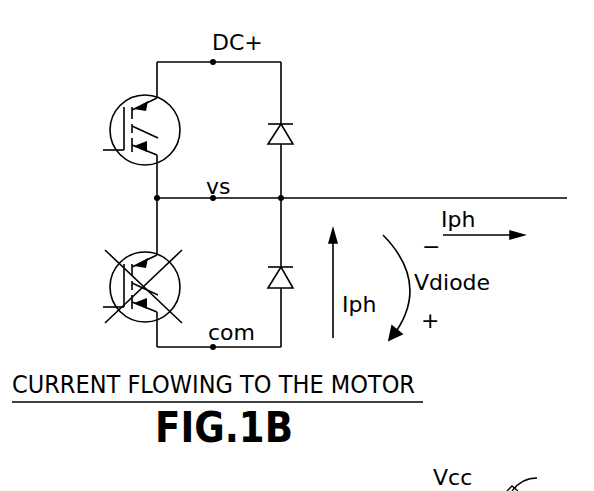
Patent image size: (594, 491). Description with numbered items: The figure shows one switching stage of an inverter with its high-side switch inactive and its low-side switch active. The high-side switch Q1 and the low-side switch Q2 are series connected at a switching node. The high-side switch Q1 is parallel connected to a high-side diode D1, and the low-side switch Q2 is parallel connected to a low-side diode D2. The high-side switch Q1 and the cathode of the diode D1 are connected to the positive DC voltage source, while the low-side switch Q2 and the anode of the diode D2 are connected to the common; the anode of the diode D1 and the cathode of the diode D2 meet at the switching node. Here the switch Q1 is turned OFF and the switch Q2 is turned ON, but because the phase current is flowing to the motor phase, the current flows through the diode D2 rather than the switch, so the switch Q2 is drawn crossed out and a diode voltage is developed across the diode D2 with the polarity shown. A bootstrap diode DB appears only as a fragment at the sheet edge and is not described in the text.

The high-side switch Q1 is at (141, 115).
The low-side switch Q2 is at (142, 273).
The high-side diode D1 is at (296, 130).
The low-side diode D2 is at (296, 272).
The bootstrap diode DB is at (535, 477).